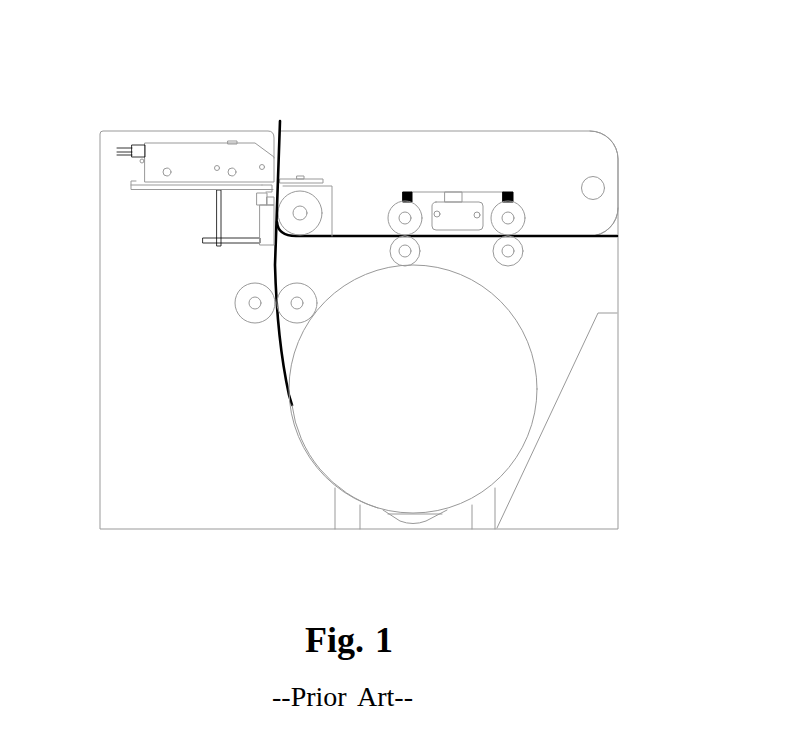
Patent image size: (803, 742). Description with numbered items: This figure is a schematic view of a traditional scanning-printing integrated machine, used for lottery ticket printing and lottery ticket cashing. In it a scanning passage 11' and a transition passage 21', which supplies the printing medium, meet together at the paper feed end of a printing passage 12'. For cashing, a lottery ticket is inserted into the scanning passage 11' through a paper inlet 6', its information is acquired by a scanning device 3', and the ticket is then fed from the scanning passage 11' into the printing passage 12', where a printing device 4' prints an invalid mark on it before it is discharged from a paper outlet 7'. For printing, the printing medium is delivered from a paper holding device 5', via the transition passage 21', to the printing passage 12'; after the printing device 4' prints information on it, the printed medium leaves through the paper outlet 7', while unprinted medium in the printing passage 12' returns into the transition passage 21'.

The scanning device 3' is at (456, 147).
The printing device 4' is at (307, 147).
The paper holding device 5' is at (179, 356).
The paper inlet 6' is at (652, 183).
The paper outlet 7' is at (307, 268).
The scanning passage 11' is at (447, 162).
The printing passage 12' is at (145, 210).
The transition passage 21' is at (503, 397).